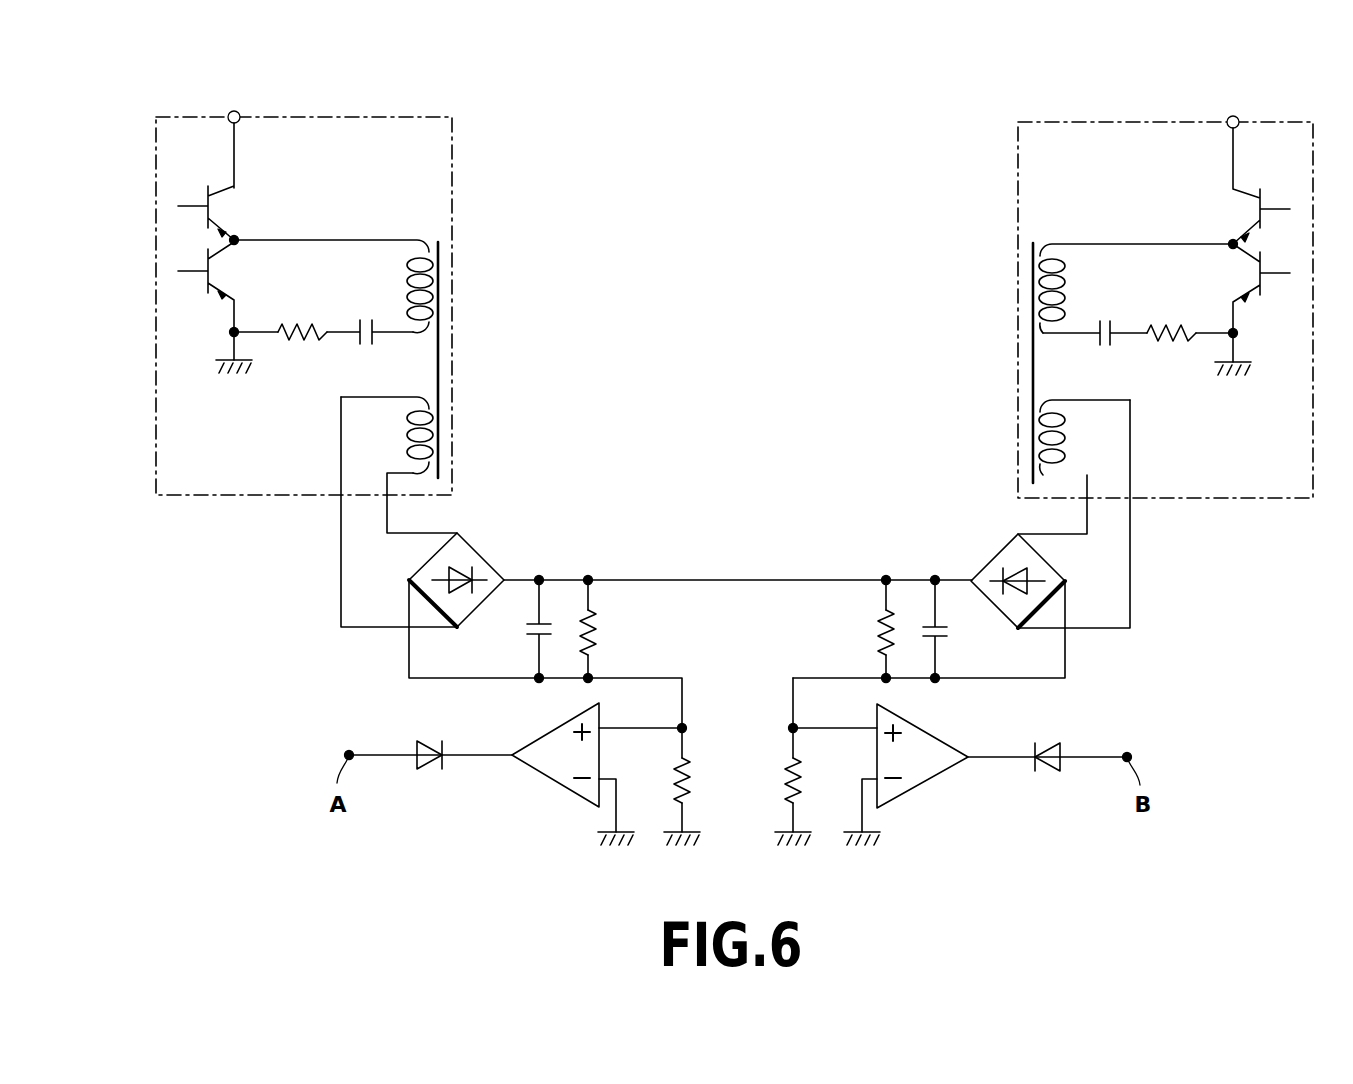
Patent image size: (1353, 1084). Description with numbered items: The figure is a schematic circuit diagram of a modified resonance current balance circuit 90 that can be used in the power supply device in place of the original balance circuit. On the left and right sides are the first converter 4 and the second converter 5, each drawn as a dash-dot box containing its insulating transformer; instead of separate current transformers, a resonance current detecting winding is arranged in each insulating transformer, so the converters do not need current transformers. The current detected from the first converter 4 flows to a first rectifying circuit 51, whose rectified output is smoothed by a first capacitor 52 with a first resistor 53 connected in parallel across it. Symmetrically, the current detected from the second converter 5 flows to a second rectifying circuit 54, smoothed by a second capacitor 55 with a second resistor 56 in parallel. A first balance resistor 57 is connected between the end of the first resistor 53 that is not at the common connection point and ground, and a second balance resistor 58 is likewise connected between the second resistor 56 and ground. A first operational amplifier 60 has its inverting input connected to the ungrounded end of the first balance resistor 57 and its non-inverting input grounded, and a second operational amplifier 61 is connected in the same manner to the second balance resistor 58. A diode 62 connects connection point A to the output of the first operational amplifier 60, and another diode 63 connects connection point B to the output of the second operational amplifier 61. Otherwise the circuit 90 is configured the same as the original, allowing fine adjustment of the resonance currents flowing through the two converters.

The first converter 4 is at (452, 195).
The second converter 5 is at (1018, 195).
The resonance current balance circuit 90 is at (712, 358).
The first rectifying circuit 51 is at (480, 556).
The first capacitor 52 is at (524, 632).
The first resistor 53 is at (603, 622).
The second rectifying circuit 54 is at (1047, 556).
The second capacitor 55 is at (950, 632).
The second resistor 56 is at (876, 636).
The first balance resistor 57 is at (689, 769).
The second balance resistor 58 is at (783, 762).
The first operational amplifier 60 is at (554, 778).
The second operational amplifier 61 is at (929, 780).
The diode 62 is at (430, 770).
The diode 63 is at (1047, 773).